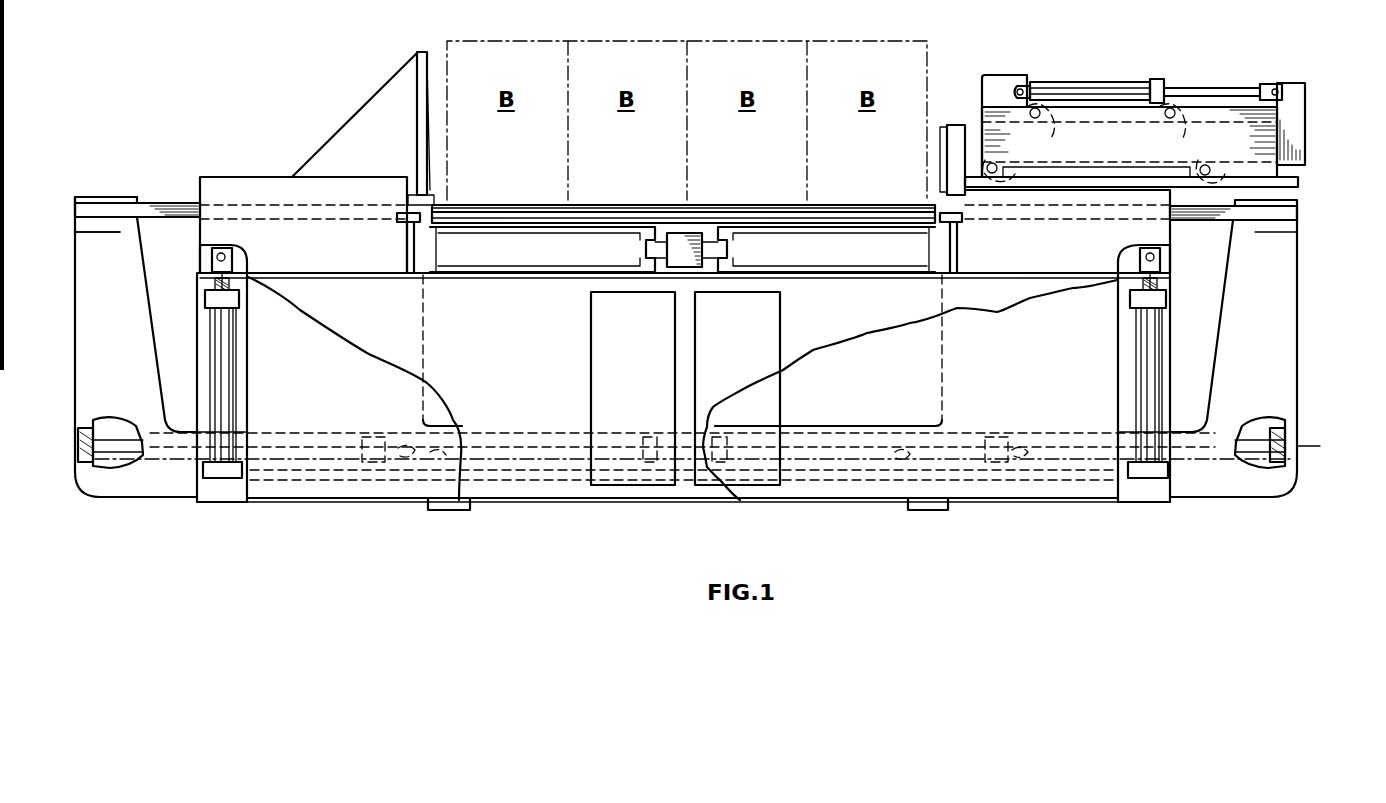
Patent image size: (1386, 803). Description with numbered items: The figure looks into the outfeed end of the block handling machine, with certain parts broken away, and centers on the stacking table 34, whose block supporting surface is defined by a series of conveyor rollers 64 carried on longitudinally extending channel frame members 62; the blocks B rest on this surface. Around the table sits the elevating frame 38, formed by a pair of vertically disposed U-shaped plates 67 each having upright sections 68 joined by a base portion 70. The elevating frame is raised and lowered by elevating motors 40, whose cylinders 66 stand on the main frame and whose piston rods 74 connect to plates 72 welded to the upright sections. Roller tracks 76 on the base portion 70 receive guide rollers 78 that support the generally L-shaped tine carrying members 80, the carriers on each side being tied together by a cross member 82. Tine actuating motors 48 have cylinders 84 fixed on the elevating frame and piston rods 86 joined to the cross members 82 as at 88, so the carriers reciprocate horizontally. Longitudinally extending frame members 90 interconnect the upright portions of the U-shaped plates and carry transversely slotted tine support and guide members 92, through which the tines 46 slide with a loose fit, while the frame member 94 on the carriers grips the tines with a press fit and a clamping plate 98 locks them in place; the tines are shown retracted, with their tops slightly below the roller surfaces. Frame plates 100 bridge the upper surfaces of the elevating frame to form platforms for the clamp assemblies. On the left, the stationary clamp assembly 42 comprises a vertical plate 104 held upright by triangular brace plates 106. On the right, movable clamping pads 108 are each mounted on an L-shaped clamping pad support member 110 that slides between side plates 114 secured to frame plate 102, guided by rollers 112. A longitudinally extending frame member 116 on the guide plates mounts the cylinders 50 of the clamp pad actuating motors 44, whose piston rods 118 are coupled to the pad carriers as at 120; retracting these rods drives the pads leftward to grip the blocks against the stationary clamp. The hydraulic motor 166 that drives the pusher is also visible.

The stacking table 34 is at (610, 204).
The elevating frame 38 is at (256, 170).
The elevating motors 40 is at (236, 336).
The stationary clamp assembly 42 is at (433, 76).
The clamp pad actuating motors 44 is at (1094, 80).
The tines 46 is at (176, 203).
The tine actuating motors 48 is at (515, 446).
The cylinders of clamp pad actuating motors 50 is at (1134, 82).
The channel frame members 62 is at (438, 256).
The conveyor rollers 64 is at (746, 205).
The cylinders of elevating motors 66 is at (236, 390).
The U-shaped plates 67 is at (1020, 392).
The upright sections 68 is at (338, 366).
The base portion 70 is at (908, 426).
The plates 72 is at (234, 256).
The piston rods 74 is at (213, 284).
The roller tracks 76 is at (462, 450).
The guide rollers 78 is at (205, 456).
The L-shaped tine carrying members 80 is at (128, 340).
The cross member 82 is at (112, 420).
The cylinders of tine actuating motors 84 is at (530, 462).
The piston rods of tine actuating motors 86 is at (330, 445).
The connection of piston rods to cross members 88 is at (1300, 444).
The longitudinally extending frame members 90 is at (410, 256).
The tine support and guide members 92 is at (398, 220).
The frame member 94 is at (118, 232).
The clamping plate 98 is at (110, 197).
The frame plates 100 is at (220, 177).
The frame plate 102 is at (1125, 178).
The vertical plate 104 is at (430, 150).
The triangular brace plates 106 is at (380, 100).
The clamping pads 108 is at (947, 150).
The clamping pad support member 110 is at (1306, 120).
The rollers 112 is at (1040, 120).
The side plates 114 is at (1262, 152).
The longitudinally extending frame member 116 is at (1002, 75).
The piston rods 118 is at (1208, 86).
The coupling of piston rods to pad carriers 120 is at (1278, 84).
The hydraulic motor 166 is at (682, 252).